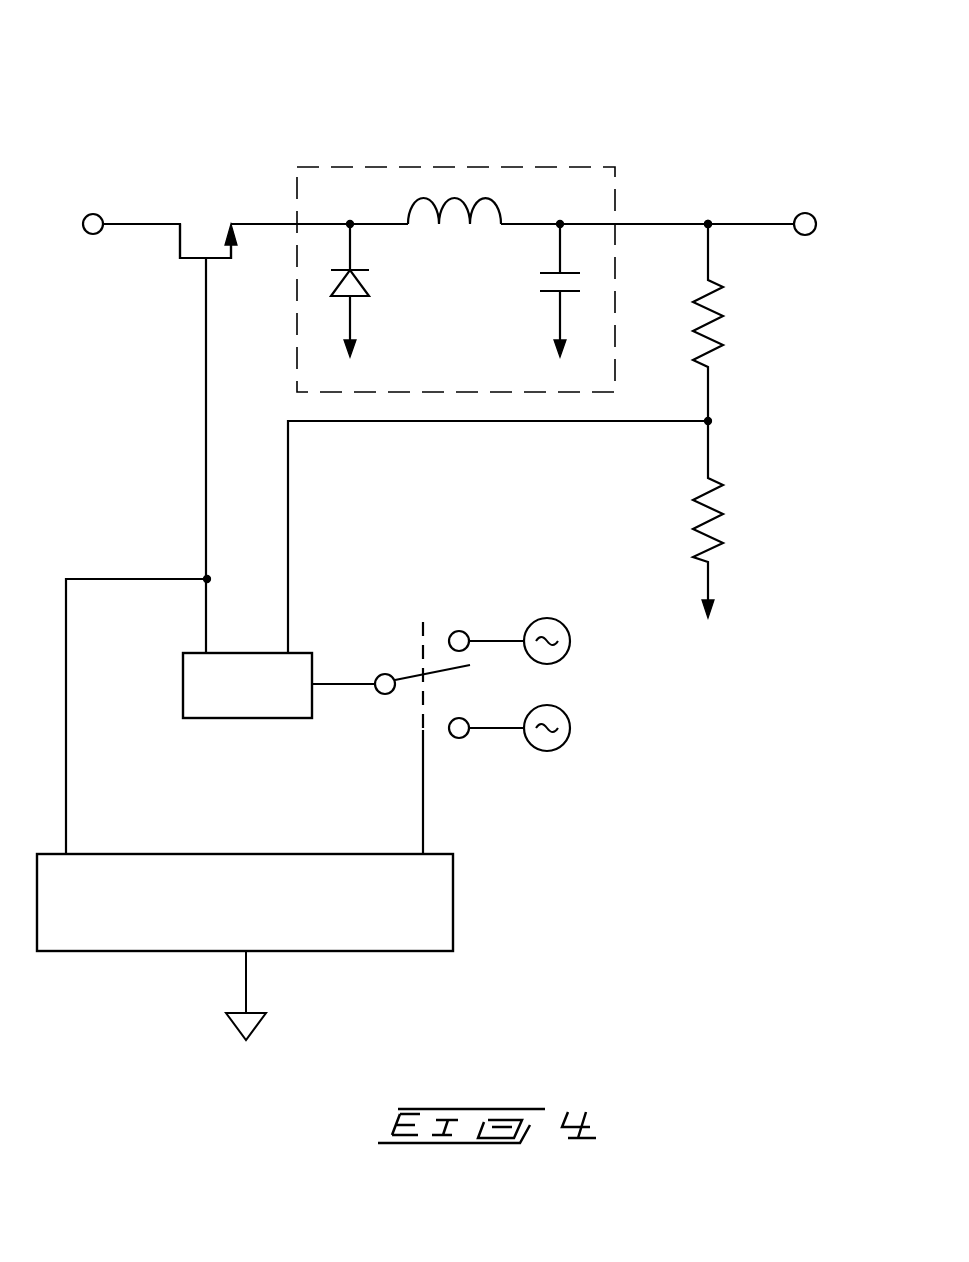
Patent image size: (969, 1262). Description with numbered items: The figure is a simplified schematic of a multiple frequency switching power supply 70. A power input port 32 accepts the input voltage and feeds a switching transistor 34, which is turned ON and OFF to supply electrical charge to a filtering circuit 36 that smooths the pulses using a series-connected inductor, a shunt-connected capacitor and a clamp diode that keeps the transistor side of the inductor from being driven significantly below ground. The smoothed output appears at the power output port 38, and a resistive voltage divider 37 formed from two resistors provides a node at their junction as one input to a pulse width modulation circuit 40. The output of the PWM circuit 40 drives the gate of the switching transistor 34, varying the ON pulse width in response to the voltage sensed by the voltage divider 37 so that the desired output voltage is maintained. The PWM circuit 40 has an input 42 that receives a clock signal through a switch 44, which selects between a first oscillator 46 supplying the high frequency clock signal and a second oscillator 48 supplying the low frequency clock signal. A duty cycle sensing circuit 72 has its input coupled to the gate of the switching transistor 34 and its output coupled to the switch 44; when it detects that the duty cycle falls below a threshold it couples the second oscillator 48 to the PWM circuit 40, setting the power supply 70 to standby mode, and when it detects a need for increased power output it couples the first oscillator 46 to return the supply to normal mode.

The multiple frequency switching power supply 70 is at (172, 60).
The power input port 32 is at (95, 212).
The switching transistor 34 is at (170, 238).
The filtering circuit 36 is at (388, 165).
The voltage divider 37 is at (725, 185).
The power output port 38 is at (805, 237).
The pulse width modulation circuit 40 is at (183, 685).
The input 42 is at (313, 683).
The switch 44 is at (394, 721).
The first oscillator 46 is at (545, 750).
The second oscillator 48 is at (540, 618).
The duty cycle sensing circuit 72 is at (453, 907).